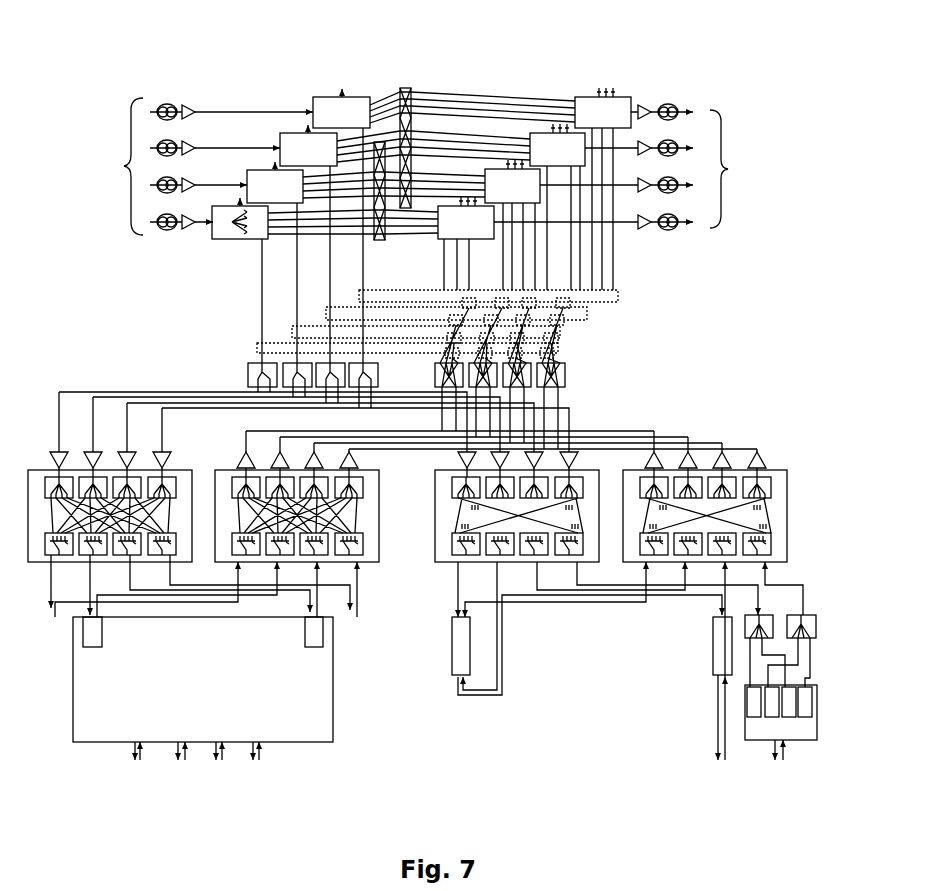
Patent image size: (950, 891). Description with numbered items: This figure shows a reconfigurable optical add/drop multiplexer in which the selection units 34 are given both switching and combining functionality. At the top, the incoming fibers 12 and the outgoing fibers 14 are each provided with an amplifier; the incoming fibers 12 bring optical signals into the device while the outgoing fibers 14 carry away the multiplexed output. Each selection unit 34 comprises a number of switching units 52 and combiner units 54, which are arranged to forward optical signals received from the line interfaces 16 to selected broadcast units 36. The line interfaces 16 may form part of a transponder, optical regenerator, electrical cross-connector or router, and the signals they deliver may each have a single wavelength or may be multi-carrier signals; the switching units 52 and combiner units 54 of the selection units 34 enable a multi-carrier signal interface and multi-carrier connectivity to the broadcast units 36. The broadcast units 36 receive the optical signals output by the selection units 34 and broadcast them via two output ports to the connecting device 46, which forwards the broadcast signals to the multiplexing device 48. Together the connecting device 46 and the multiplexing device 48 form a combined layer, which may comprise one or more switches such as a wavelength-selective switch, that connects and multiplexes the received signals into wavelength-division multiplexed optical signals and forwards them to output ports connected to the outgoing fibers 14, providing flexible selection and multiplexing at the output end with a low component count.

The incoming fiber 12 is at (199, 166).
The outgoing fiber 14 is at (624, 167).
The multiplexing device 48 is at (383, 84).
The connecting device 46 is at (626, 287).
The broadcast unit 36 is at (568, 374).
The selection unit 34 is at (382, 508).
The combiner unit 54 is at (357, 485).
The switching unit 52 is at (368, 548).
The line interface 16 is at (88, 635).